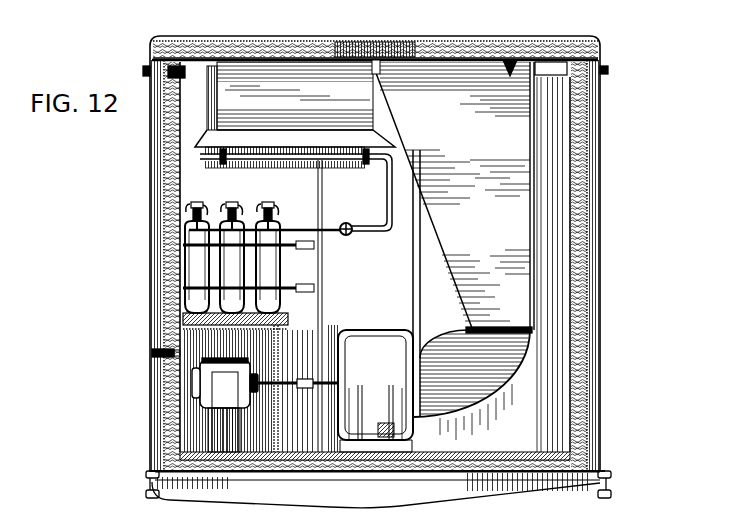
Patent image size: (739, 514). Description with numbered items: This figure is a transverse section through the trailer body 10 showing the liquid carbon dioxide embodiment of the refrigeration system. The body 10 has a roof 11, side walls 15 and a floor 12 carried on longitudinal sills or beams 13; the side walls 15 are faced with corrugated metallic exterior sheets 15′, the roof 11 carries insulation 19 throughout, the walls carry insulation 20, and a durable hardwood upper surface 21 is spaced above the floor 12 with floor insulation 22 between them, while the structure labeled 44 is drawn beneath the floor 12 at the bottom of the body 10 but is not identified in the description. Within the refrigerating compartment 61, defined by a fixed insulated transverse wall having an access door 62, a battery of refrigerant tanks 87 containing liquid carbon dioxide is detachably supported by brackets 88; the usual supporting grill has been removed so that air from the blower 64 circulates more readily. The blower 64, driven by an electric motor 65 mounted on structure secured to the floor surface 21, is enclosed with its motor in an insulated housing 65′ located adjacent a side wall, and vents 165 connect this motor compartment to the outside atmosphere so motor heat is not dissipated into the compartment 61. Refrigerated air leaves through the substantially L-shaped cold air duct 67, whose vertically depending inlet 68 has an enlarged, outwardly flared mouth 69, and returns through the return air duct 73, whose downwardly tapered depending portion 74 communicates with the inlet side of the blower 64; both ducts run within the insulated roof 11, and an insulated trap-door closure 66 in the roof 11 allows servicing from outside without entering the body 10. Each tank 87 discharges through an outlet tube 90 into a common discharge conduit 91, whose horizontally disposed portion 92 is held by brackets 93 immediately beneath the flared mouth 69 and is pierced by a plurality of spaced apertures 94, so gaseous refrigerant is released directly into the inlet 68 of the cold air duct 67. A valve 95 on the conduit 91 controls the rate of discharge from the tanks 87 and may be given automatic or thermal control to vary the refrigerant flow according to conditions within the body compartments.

The trailer body 10 is at (604, 113).
The roof 11 is at (227, 42).
The floor 12 is at (363, 473).
The sills or beams 13 is at (152, 480).
The side walls 15 is at (165, 242).
The corrugated exterior sheets 15′ is at (152, 172).
The roof insulation 19 is at (454, 52).
The wall insulation 20 is at (168, 330).
The upper floor surface 21 is at (275, 460).
The floor insulation 22 is at (448, 468).
The bottom pan 44 is at (518, 498).
The refrigerating compartment 61 is at (312, 332).
The door 62 is at (412, 304).
The blower 64 is at (382, 330).
The electric motor 65 is at (232, 357).
The insulated motor housing 65′ is at (279, 356).
The insulated closure 66 is at (378, 44).
The cold air duct 67 is at (278, 70).
The duct inlet 68 is at (222, 106).
The flared mouth 69 is at (330, 137).
The return air duct 73 is at (510, 65).
The tapered return duct portion 74 is at (515, 249).
The refrigerant tanks 87 is at (277, 274).
The brackets 88 is at (200, 205).
The outlet tubes 90 is at (290, 204).
The discharge conduit 91 is at (298, 230).
The horizontal conduit portion 92 is at (300, 163).
The conduit brackets 93 is at (215, 165).
The spaced apertures 94 is at (303, 162).
The control valve 95 is at (350, 237).
The vents 165 is at (160, 353).